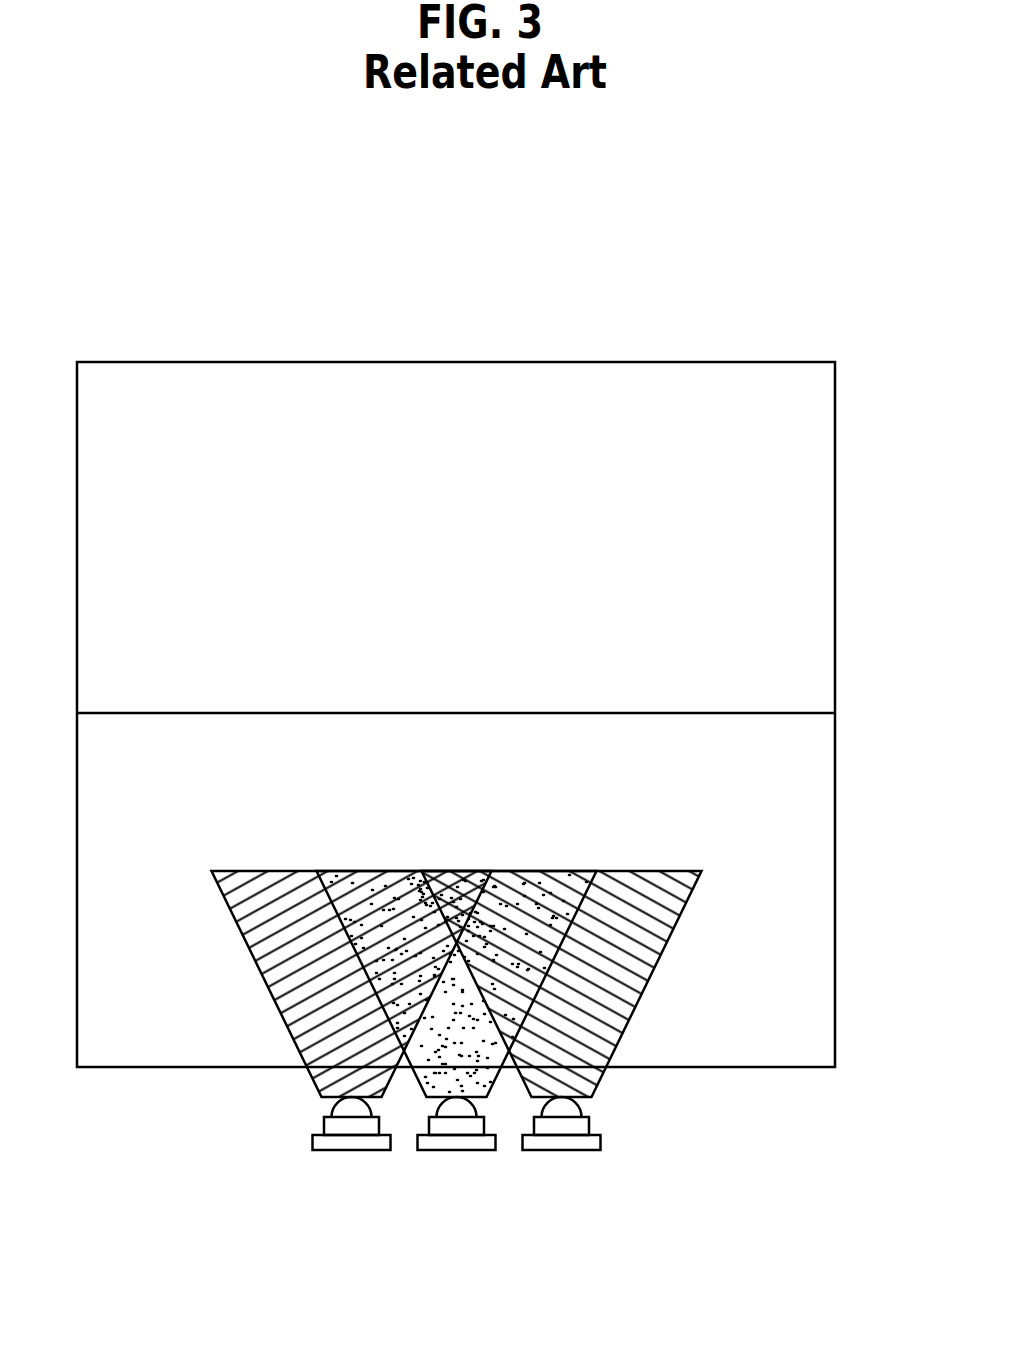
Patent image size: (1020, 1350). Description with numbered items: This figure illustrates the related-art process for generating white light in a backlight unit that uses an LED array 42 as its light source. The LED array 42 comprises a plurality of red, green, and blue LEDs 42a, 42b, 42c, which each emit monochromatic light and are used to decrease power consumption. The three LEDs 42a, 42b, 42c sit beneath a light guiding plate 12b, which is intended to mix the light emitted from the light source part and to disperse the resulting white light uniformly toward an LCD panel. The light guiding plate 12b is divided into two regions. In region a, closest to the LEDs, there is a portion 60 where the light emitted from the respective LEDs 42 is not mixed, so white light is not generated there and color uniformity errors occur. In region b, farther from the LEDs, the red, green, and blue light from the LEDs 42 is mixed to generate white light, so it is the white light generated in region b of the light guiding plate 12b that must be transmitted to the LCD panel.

The light guiding plate 12b is at (413, 358).
The region b is at (820, 526).
The region a is at (820, 802).
The portion where light is not mixed 60 is at (440, 1032).
The LED array 42 is at (457, 1205).
The red LED 42a is at (350, 1128).
The green LED 42b is at (456, 1128).
The blue LED 42c is at (562, 1161).